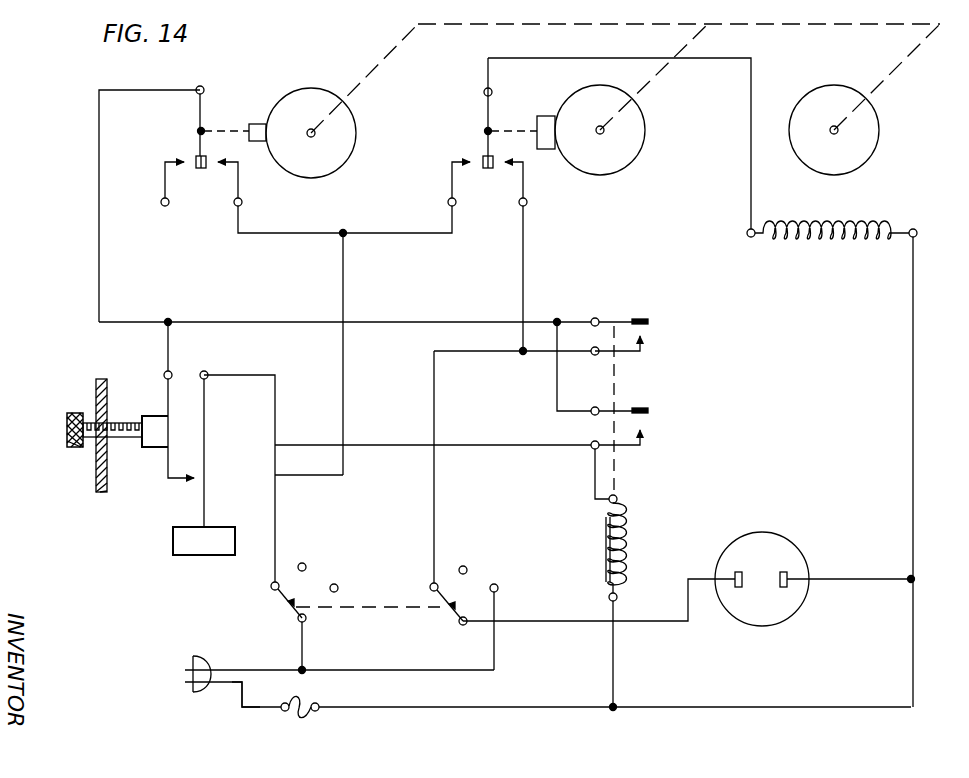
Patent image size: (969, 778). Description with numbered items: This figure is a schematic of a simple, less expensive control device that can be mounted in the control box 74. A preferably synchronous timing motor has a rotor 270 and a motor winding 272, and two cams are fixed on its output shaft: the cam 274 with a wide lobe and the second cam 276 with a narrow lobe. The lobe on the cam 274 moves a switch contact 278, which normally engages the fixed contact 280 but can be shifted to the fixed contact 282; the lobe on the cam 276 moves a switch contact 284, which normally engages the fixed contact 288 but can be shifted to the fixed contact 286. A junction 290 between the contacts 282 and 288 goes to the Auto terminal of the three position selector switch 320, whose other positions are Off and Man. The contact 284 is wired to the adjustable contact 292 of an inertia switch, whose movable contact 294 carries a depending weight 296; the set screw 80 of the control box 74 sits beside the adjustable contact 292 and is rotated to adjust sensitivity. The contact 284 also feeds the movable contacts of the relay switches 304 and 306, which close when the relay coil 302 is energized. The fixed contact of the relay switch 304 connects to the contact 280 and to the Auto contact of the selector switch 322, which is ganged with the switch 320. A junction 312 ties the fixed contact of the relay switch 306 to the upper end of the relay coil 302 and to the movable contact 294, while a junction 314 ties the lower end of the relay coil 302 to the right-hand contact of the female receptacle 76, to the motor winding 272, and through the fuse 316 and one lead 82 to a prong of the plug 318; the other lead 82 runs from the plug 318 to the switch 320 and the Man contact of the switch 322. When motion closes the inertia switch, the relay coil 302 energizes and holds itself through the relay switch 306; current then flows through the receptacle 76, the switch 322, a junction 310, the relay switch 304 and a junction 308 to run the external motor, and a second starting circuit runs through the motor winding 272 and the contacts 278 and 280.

The control box 74 is at (93, 479).
The female receptacle 76 is at (795, 542).
The set screw 80 is at (66, 423).
The lead 82 is at (246, 672).
The rotor 270 is at (864, 167).
The motor winding 272 is at (821, 242).
The cam 274 is at (646, 127).
The second cam 276 is at (356, 123).
The switch contact 278 is at (486, 146).
The fixed contact 280 is at (526, 164).
The fixed contact 282 is at (452, 162).
The switch contact 284 is at (196, 148).
The fixed contact 286 is at (180, 162).
The fixed contact 288 is at (240, 164).
The junction 290 is at (348, 238).
The adjustable contact 292 is at (168, 478).
The movable contact 294 is at (208, 512).
The weight 296 is at (195, 557).
The relay coil 302 is at (640, 540).
The relay switch 304 is at (650, 337).
The relay switch 306 is at (650, 428).
The junction 308 is at (559, 315).
The junction 310 is at (518, 356).
The junction 312 is at (576, 452).
The junction 314 is at (620, 700).
The fuse 316 is at (299, 714).
The plug 318 is at (194, 701).
The selector switch 320 is at (297, 624).
The selector switch 322 is at (459, 629).